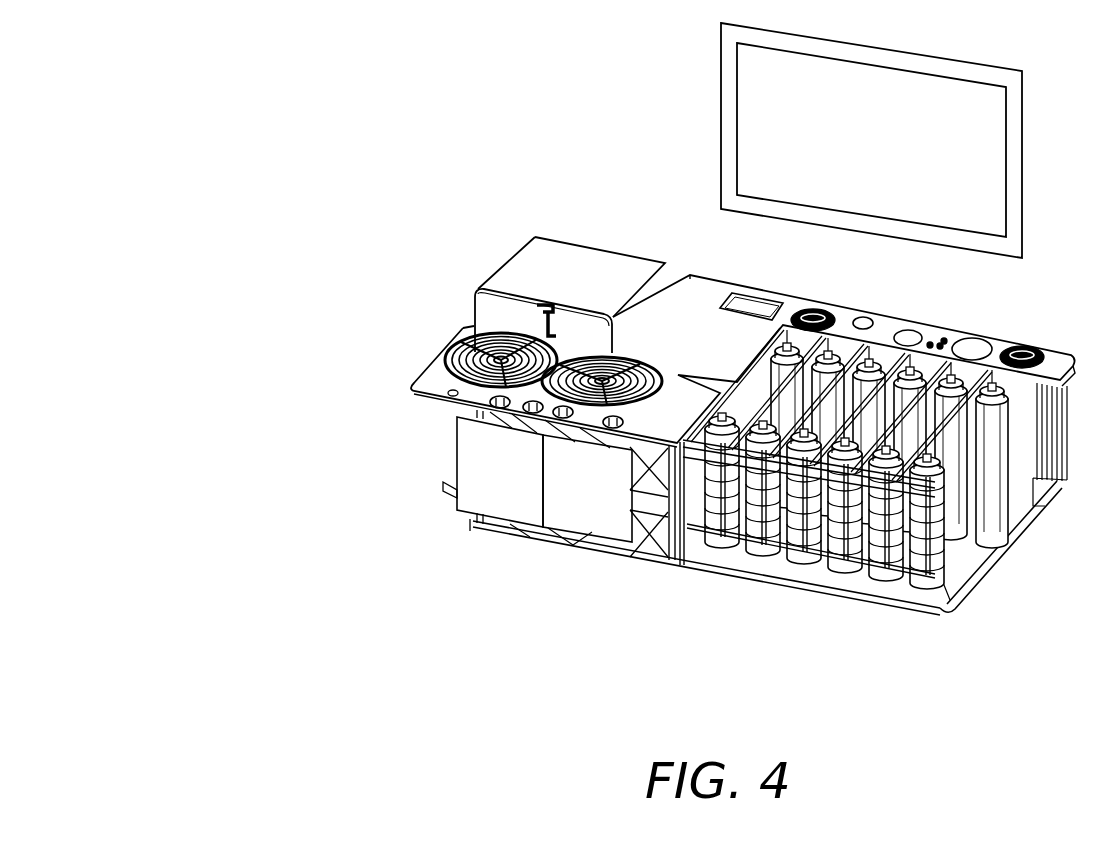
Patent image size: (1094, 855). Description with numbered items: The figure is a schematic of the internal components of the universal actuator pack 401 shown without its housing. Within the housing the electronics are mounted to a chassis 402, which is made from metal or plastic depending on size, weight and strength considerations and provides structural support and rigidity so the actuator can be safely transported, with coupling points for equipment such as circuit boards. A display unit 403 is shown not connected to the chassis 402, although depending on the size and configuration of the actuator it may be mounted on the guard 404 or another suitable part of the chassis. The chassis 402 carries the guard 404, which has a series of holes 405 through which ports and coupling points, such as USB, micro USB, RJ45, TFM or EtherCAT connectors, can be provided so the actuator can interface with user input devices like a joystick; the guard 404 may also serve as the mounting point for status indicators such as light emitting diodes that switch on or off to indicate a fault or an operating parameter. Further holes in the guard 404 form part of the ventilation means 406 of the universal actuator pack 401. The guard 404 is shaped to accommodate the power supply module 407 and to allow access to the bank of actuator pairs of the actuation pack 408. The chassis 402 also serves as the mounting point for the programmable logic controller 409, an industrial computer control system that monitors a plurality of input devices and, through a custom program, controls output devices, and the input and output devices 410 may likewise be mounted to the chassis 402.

The universal actuator pack 401 is at (340, 116).
The chassis 402 is at (802, 583).
The display unit 403 is at (772, 123).
The guard 404 is at (432, 380).
The holes 405 is at (973, 350).
The ventilation means 406 is at (456, 344).
The power supply module 407 is at (530, 262).
The actuation pack 408 is at (977, 497).
The programmable logic controller (PLC) 409 is at (477, 461).
The input and output devices 410 is at (598, 490).